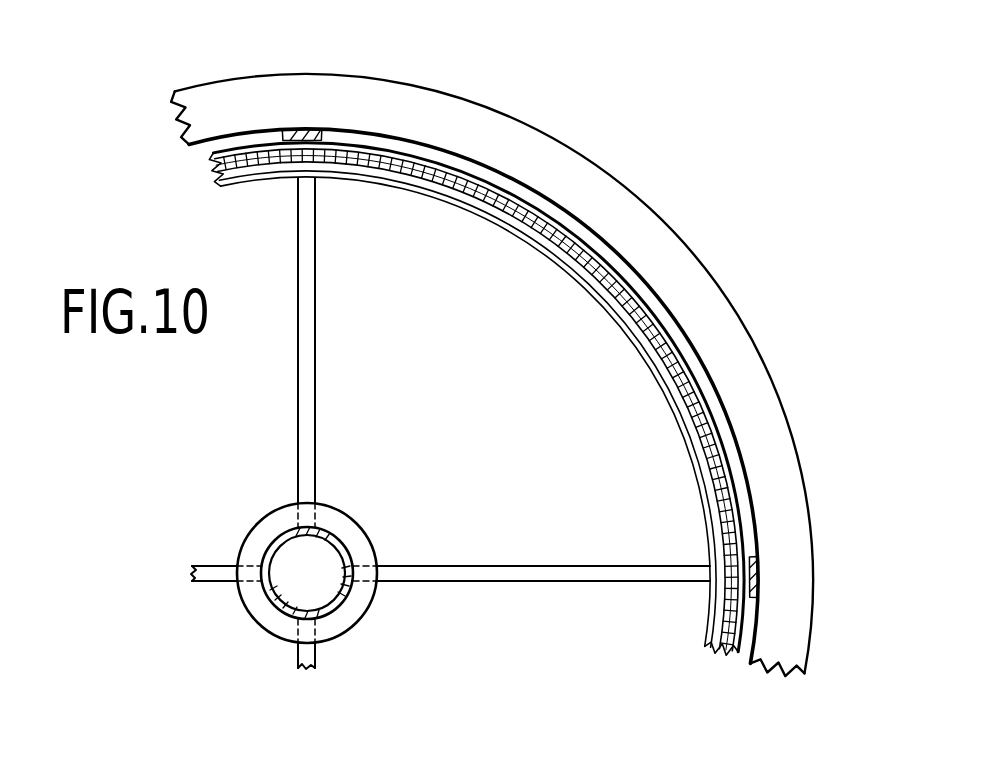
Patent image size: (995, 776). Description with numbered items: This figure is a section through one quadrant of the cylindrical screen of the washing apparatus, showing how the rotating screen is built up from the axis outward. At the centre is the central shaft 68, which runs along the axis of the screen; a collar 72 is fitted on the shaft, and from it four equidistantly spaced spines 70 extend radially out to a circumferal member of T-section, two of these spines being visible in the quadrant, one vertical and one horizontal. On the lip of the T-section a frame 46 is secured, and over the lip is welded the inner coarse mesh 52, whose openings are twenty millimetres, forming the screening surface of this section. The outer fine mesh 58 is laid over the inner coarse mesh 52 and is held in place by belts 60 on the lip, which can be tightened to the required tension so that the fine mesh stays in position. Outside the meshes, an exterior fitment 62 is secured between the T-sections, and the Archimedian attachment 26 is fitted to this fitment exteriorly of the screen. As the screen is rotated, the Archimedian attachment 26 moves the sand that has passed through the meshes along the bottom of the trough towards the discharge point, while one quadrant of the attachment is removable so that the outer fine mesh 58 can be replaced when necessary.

The Archimedian attachment 26 is at (478, 115).
The frame 46 is at (574, 224).
The inner coarse mesh 52 is at (690, 380).
The outer fine mesh 58 is at (655, 322).
The belts 60 is at (600, 262).
The exterior fitment 62 is at (311, 129).
The central shaft 68 is at (352, 562).
The spines 70 is at (305, 302).
The collar 72 is at (335, 522).